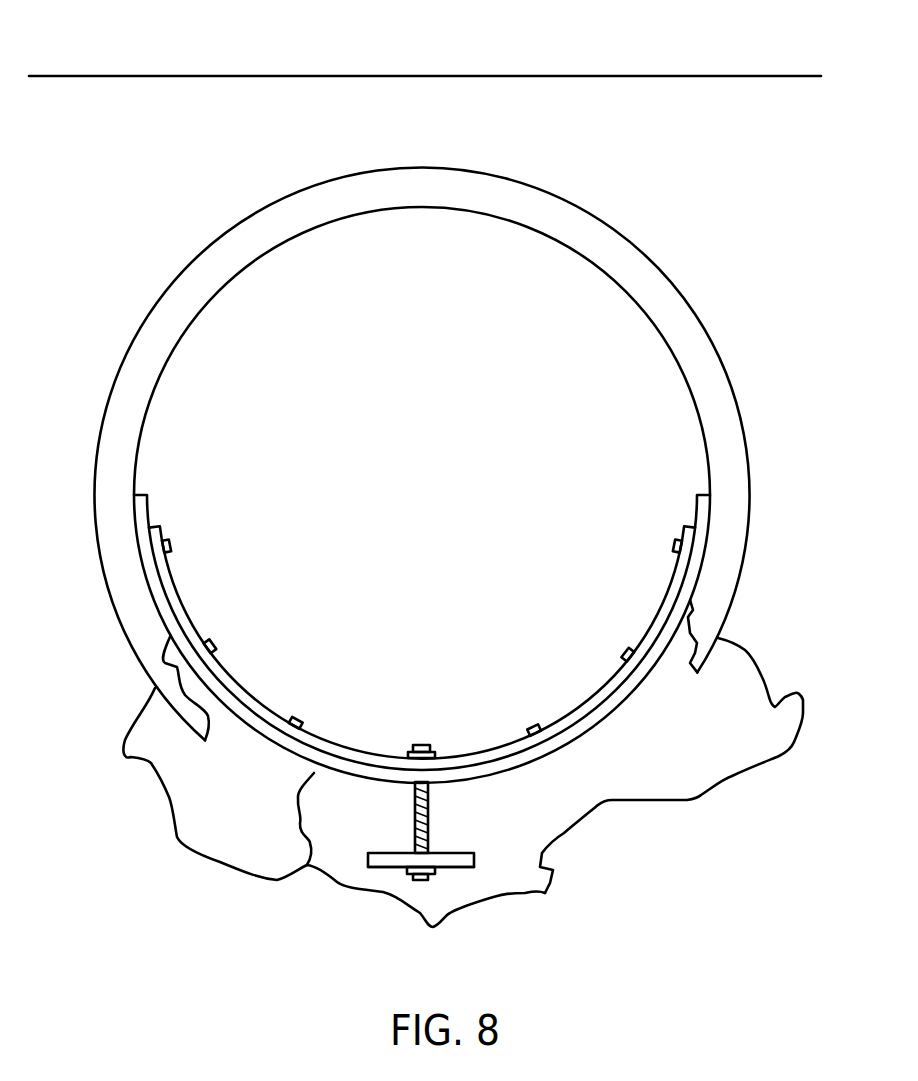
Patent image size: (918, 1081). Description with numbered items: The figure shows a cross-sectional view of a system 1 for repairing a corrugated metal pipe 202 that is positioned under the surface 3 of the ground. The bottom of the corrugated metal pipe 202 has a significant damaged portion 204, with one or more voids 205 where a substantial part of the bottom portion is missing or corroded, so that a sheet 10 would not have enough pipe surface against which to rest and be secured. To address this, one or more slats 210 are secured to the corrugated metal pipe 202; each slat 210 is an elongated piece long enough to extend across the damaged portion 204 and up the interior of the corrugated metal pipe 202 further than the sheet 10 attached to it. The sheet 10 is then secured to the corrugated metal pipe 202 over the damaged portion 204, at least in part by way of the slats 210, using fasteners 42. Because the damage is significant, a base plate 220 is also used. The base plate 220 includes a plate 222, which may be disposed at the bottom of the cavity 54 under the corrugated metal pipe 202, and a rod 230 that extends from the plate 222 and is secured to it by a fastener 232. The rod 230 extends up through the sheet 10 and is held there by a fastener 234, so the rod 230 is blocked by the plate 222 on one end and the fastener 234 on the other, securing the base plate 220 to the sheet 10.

The system 1 is at (721, 219).
The surface of the ground 3 is at (525, 76).
The corrugated metal pipe 202 is at (320, 198).
The slat 210 is at (267, 733).
The sheet 10 is at (345, 745).
The fastener 42 is at (173, 547).
The fastener 234 is at (422, 744).
The rod 230 is at (430, 815).
The base plate 220 is at (398, 852).
The plate 222 is at (385, 862).
The fastener 232 is at (412, 877).
The cavity 54 is at (472, 892).
The damaged portion 204 is at (308, 867).
The void 205 is at (530, 773).